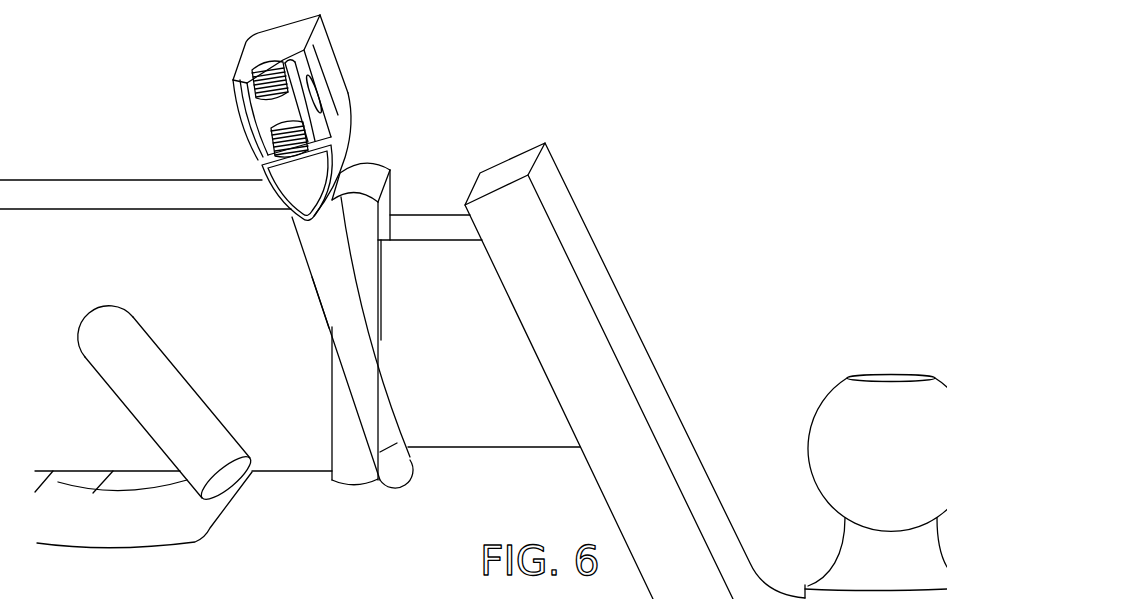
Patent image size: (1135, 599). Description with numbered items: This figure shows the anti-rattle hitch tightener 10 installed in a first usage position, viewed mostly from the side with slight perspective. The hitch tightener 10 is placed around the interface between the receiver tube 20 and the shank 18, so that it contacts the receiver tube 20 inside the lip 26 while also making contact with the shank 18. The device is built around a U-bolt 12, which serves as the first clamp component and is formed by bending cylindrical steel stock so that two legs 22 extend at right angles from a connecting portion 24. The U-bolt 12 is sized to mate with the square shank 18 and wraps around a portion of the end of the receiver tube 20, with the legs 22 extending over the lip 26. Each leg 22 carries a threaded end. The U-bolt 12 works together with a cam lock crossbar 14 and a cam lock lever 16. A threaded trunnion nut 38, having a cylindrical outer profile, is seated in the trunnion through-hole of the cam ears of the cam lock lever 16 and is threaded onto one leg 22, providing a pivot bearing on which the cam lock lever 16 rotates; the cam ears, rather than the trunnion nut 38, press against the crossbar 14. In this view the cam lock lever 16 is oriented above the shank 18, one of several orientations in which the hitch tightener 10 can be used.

The anti-rattle hitch tightener 10 is at (298, 114).
The U-bolt 12 is at (389, 373).
The cam lock crossbar 14 is at (347, 152).
The cam lock lever 16 is at (257, 50).
The shank 18 is at (472, 418).
The receiver tube 20 is at (190, 198).
The legs 22 is at (357, 308).
The connecting portion 24 is at (423, 452).
The lip 26 is at (374, 154).
The trunnion nut 38 is at (280, 110).